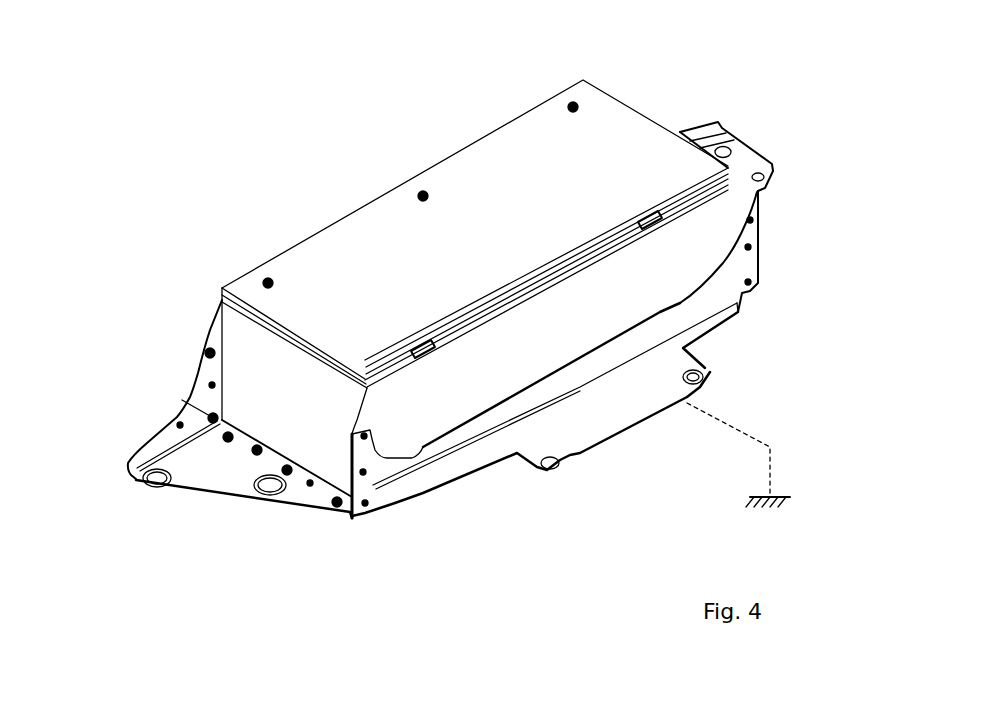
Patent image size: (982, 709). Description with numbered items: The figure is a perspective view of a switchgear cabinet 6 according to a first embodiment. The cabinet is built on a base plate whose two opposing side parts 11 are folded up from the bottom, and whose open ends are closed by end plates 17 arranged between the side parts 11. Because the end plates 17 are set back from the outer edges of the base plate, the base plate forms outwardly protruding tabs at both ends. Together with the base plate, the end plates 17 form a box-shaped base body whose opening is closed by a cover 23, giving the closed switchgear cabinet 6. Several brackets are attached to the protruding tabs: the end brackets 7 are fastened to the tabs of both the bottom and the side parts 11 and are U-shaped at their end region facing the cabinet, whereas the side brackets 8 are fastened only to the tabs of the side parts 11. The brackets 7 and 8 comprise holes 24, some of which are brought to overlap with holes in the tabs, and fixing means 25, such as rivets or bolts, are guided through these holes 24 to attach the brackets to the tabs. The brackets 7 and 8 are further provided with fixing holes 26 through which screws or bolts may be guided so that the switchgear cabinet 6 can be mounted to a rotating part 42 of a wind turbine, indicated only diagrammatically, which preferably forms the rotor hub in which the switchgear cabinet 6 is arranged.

The switchgear cabinet 6 is at (332, 157).
The end brackets 7 is at (750, 150).
The side brackets 8 is at (645, 403).
The side parts 11 is at (402, 430).
The end plates 17 is at (327, 458).
The cover 23 is at (618, 118).
The holes 24 is at (748, 247).
The fixing means 25 is at (182, 400).
The fixing holes 26 is at (142, 482).
The rotating part 42 is at (780, 493).